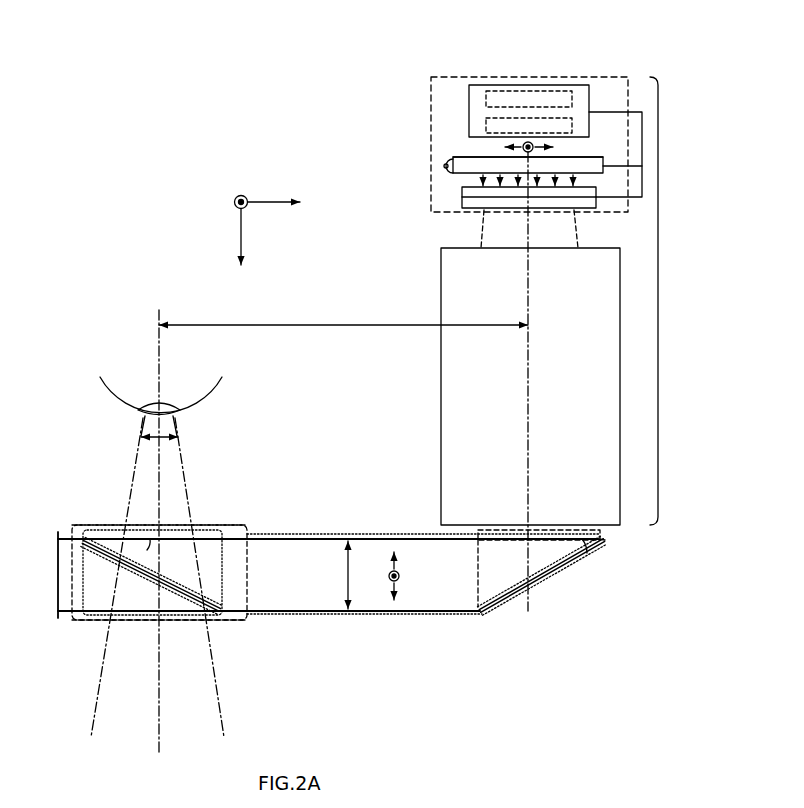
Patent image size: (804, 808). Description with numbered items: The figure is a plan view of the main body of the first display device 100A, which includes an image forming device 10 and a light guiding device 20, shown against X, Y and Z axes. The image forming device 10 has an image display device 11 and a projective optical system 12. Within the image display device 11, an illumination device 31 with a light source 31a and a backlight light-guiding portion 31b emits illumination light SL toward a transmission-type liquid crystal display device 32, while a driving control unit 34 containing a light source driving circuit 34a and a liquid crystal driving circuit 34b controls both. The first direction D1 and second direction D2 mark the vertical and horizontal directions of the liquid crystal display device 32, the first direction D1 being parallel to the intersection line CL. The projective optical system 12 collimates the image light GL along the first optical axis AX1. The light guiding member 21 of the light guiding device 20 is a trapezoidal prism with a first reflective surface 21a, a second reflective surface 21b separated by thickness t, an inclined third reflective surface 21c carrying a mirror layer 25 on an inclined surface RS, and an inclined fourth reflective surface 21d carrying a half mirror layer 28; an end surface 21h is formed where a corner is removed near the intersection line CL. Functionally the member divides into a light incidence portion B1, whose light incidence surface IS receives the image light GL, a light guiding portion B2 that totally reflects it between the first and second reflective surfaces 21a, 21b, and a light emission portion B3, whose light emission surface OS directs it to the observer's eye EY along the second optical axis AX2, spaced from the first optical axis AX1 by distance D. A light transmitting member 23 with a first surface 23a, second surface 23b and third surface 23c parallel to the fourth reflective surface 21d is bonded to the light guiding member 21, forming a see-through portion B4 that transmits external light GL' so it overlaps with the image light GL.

The first display device 100A is at (125, 88).
The image forming device 10 is at (658, 308).
The image display device 11 is at (465, 77).
The projective optical system 12 is at (441, 402).
The light guiding device 20 is at (350, 632).
The light guiding member 21 is at (452, 600).
The first reflective surface 21a is at (366, 538).
The second reflective surface 21b is at (422, 612).
The third reflective surface 21c is at (505, 600).
The fourth reflective surface 21d is at (118, 557).
The end surface 21h is at (608, 545).
The light transmitting member 23 is at (100, 593).
The first surface 23a is at (70, 527).
The second surface 23b is at (135, 613).
The third surface 23c is at (207, 530).
The mirror layer 25 is at (545, 583).
The half mirror layer 28 is at (60, 577).
The illumination device 31 is at (392, 140).
The light source 31a is at (438, 165).
The backlight light-guiding portion 31b is at (465, 158).
The liquid crystal display device 32 is at (462, 198).
The driving control unit 34 is at (505, 85).
The light source driving circuit 34a is at (543, 96).
The liquid crystal driving circuit 34b is at (567, 93).
The first optical axis AX1 is at (528, 232).
The second optical axis AX2 is at (159, 347).
The observer's eye EY is at (115, 400).
The image light GL is at (364, 473).
The external light GL' is at (116, 577).
The illumination light SL is at (575, 168).
The light incidence surface IS is at (497, 555).
The inclined surface RS is at (560, 573).
The intersection line CL is at (607, 540).
The light emission surface OS is at (112, 530).
The light incidence portion B1 is at (555, 585).
The light guiding portion B2 is at (307, 614).
The light emission portion B3 is at (250, 535).
The see-through portion B4 is at (237, 618).
The distance D is at (343, 312).
The first direction D1 is at (524, 144).
The second direction D2 is at (533, 143).
The thickness t is at (353, 575).
The X-direction X is at (278, 189).
The Y-direction Y is at (231, 194).
The Z-direction Z is at (229, 240).